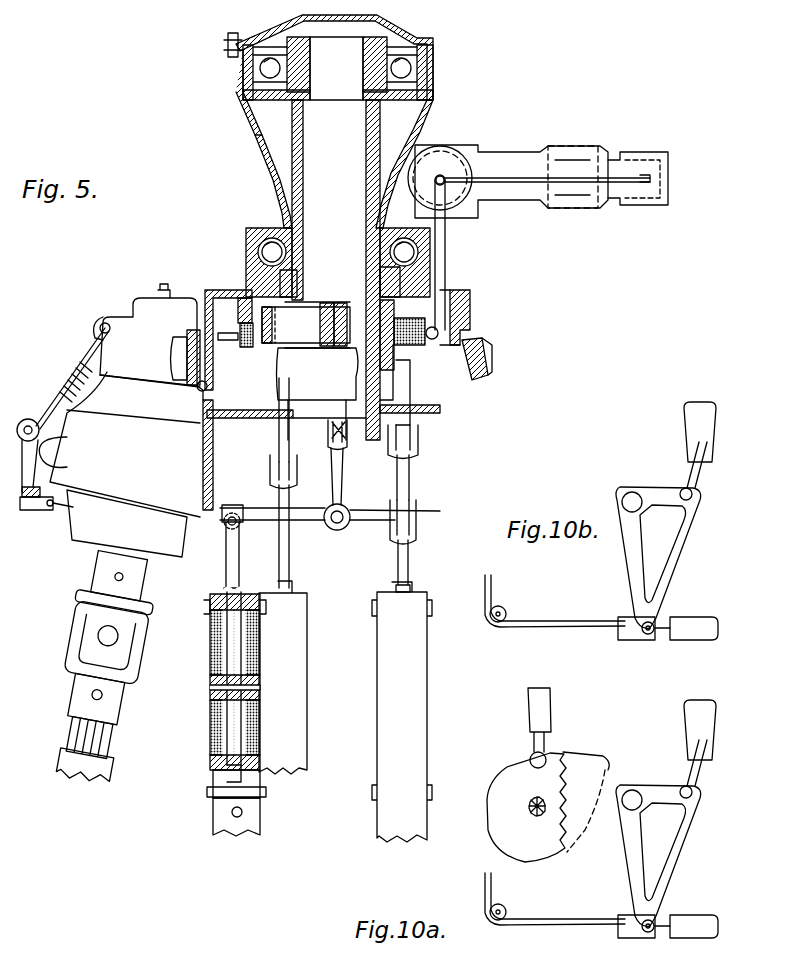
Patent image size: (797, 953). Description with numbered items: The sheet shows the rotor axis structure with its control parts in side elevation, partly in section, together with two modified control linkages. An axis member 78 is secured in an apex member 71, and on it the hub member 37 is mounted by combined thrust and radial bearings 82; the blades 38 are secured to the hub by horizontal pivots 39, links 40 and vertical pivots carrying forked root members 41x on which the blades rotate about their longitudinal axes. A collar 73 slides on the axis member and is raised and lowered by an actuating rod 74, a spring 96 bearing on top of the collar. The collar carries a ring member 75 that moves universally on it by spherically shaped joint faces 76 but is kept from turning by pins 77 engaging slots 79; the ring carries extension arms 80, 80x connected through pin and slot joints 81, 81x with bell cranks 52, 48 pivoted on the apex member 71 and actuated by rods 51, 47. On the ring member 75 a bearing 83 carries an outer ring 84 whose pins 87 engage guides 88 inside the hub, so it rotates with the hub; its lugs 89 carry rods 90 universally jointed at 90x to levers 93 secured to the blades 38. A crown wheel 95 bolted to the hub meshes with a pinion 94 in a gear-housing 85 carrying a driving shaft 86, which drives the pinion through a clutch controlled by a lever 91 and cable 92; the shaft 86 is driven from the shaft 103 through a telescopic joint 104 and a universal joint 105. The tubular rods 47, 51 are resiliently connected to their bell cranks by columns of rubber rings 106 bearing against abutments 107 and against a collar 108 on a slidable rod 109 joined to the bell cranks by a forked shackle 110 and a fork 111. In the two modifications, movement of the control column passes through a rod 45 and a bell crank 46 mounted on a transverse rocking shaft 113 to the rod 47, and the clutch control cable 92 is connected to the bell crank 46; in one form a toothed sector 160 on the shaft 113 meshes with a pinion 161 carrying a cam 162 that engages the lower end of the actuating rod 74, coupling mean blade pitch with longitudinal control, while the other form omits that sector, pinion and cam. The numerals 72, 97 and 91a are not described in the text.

In FIG. 5, the combined thrust and radial bearings 82 is at (433, 72).
In FIG. 5, the axis member 78 is at (303, 180).
In FIG. 5, the hub member 37 is at (275, 180).
In FIG. 5, the horizontal pivots 39 is at (447, 165).
In FIG. 5, the links 40 is at (497, 160).
In FIG. 5, the levers 93 is at (530, 178).
In FIG. 5, the lever 91 is at (568, 163).
In FIG. 5, the forked root members 41x is at (606, 150).
In FIG. 5, the blades 38 is at (645, 210).
In FIG. 5, the rods 90 is at (443, 235).
In FIG. 5, the universal joints 90x is at (456, 188).
In FIG. 5, the guides 88 is at (228, 312).
In FIG. 5, the pins 87 is at (230, 341).
In FIG. 5, the outer ring 84 is at (250, 348).
In FIG. 5, the bearing 83 is at (257, 330).
In FIG. 5, the slots 79 is at (328, 314).
In FIG. 5, the pins 77 is at (343, 314).
In FIG. 5, the ring member 75 is at (308, 338).
In FIG. 5, the spring 96 is at (382, 300).
In FIG. 5, the lugs 89 is at (433, 340).
In FIG. 5, the spherically shaped joint faces 76 is at (445, 310).
In FIG. 5, the crown wheel 95 is at (186, 345).
In FIG. 5, the gear-housing 85 is at (135, 330).
In FIG. 5, the pinion 94 is at (174, 358).
In FIG. 5, the flange 97 is at (205, 384).
In FIG. 5, the extension arm 80x is at (395, 412).
In FIG. 5, the rod 72 is at (392, 398).
In FIG. 5, the pin and slot joint 81x is at (415, 437).
In FIG. 5, the bell crank 48 is at (410, 468).
In FIG. 5, the fork 111 is at (414, 548).
In FIG. 5, the collar 73 is at (320, 390).
In FIG. 5, the extension arm 80 is at (340, 402).
In FIG. 5, the pin and slot joint 81 is at (344, 442).
In FIG. 5, the apex member 71 is at (369, 497).
In FIG. 5, the bell crank 52 is at (300, 520).
In FIG. 5, the forked shackle 110 is at (225, 568).
In FIG. 5, the actuating rod 74 is at (280, 642).
In FIG. 10A, the actuating rod 74 is at (544, 722).
In FIG. 5, the rod 47 is at (408, 728).
In FIG. 10B, the rod 47 is at (692, 424).
In FIG. 10A, the rod 47 is at (692, 729).
In FIG. 5, the rubber rings 106 is at (212, 658).
In FIG. 5, the abutments 107 is at (212, 622).
In FIG. 5, the collar 108 is at (212, 686).
In FIG. 5, the rod 109 is at (233, 772).
In FIG. 5, the rod 51 is at (215, 838).
In FIG. 5, the spring 91a is at (74, 366).
In FIG. 5, the cable 92 is at (66, 512).
In FIG. 10B, the cable 92 is at (555, 615).
In FIG. 10A, the cable 92 is at (555, 912).
In FIG. 5, the driving shaft 86 is at (108, 578).
In FIG. 5, the universal joint 105 is at (112, 637).
In FIG. 5, the telescopic joint 104 is at (104, 733).
In FIG. 5, the shaft 103 is at (100, 768).
In FIG. 10B, the bell crank 46 is at (680, 548).
In FIG. 10A, the bell crank 46 is at (680, 846).
In FIG. 10B, the transverse rocking shaft 113 is at (633, 492).
In FIG. 10A, the transverse rocking shaft 113 is at (630, 812).
In FIG. 10B, the rod 45 is at (688, 625).
In FIG. 10A, the rod 45 is at (688, 923).
In FIG. 10A, the cam 162 is at (510, 780).
In FIG. 10A, the pinion 161 is at (535, 807).
In FIG. 10A, the toothed sector 160 is at (567, 754).